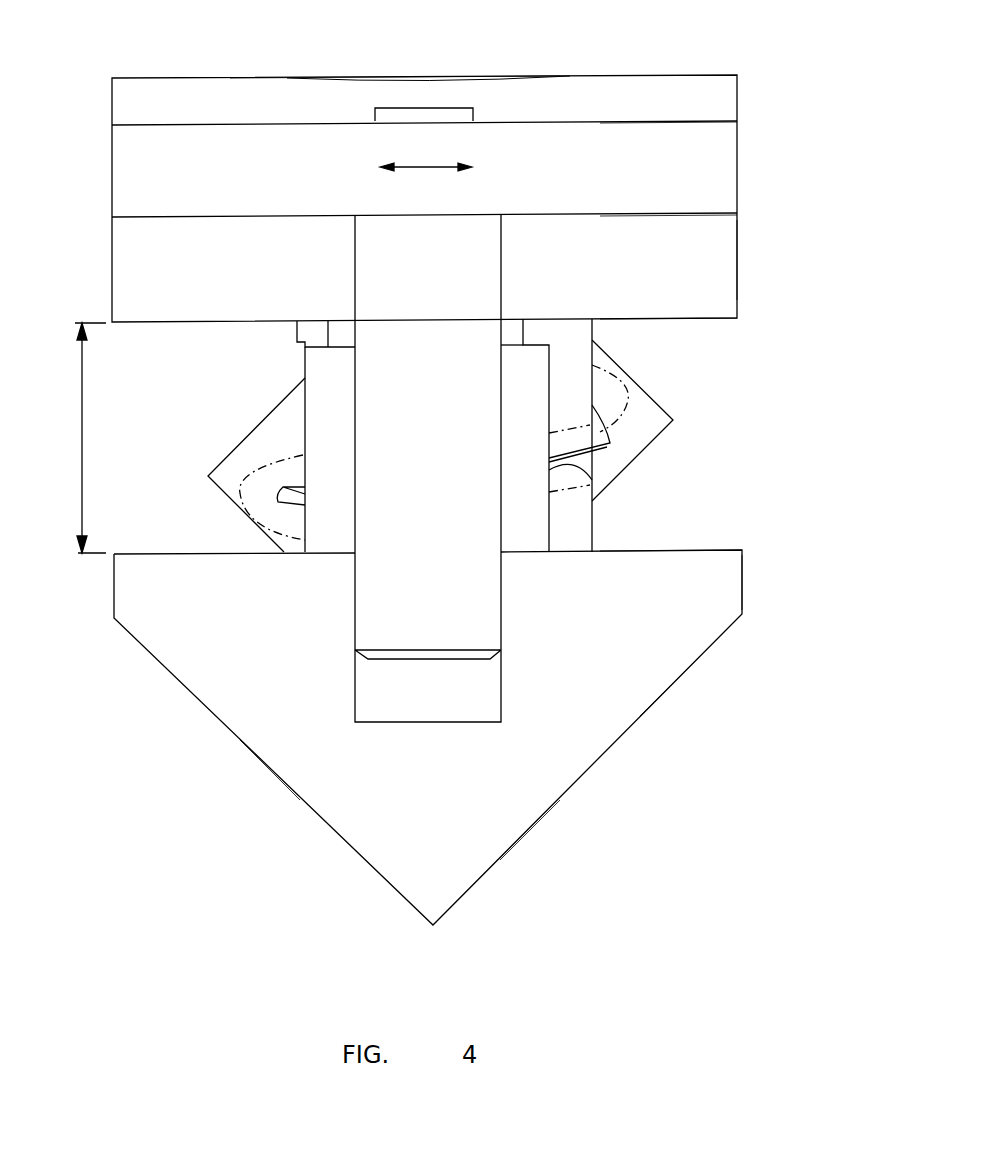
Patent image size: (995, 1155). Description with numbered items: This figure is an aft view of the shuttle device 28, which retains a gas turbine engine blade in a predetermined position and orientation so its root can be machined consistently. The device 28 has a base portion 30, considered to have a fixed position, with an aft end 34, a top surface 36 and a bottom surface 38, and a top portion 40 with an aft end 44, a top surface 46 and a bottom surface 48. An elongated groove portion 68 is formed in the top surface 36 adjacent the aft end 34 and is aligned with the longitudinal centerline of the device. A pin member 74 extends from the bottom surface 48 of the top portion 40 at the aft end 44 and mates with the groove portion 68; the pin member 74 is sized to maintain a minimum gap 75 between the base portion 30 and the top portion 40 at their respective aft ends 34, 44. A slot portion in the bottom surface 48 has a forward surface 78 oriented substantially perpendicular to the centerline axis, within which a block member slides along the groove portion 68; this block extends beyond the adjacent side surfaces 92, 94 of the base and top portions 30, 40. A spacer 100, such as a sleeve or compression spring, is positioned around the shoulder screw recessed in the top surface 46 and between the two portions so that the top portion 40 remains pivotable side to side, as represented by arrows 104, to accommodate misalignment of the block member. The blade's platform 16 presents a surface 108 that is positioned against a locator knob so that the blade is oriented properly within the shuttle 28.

The platform 16 is at (655, 400).
The device 28 is at (597, 43).
The base portion 30 is at (690, 674).
The aft end 34 is at (572, 732).
The top surface 36 is at (660, 550).
The bottom surface 38 is at (283, 782).
The top portion 40 is at (745, 148).
The aft end 44 is at (713, 187).
The top surface 46 is at (225, 78).
The bottom surface 48 is at (705, 320).
The groove portion 68 is at (501, 698).
The pin member 74 is at (477, 254).
The minimum gap 75 is at (82, 424).
The forward surface 78 is at (702, 293).
The side surface 92 is at (742, 586).
The side surface 94 is at (740, 257).
The spacer 100 is at (318, 375).
The arrows 104 is at (425, 172).
The surface 108 is at (633, 437).